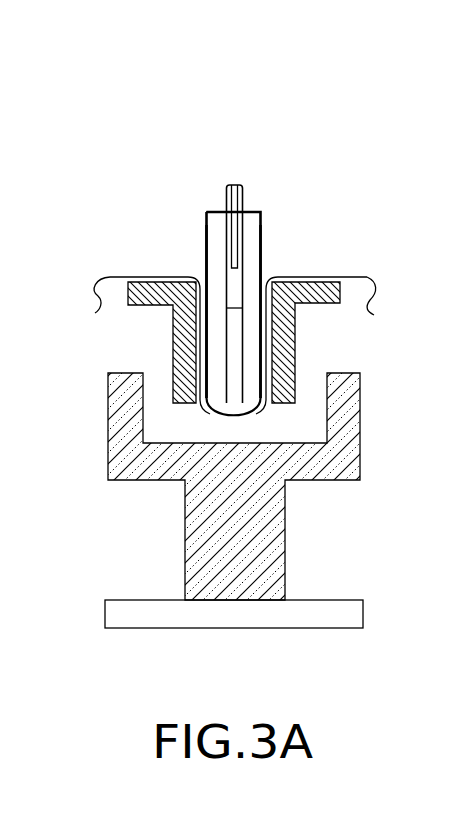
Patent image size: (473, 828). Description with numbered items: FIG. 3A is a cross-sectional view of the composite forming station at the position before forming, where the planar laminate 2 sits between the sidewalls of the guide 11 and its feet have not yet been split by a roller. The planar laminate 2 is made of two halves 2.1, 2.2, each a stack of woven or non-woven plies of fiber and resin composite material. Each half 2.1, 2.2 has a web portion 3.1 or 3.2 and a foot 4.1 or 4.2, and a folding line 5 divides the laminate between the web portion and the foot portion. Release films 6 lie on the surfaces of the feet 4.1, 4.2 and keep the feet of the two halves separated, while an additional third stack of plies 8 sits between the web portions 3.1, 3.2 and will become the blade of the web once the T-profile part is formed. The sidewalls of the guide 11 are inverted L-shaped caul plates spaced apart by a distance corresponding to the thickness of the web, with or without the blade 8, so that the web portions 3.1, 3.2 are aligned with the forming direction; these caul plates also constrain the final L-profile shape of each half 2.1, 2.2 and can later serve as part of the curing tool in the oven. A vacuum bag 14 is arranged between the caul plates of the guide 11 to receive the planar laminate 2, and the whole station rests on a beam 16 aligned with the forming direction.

The planar laminate 2 is at (340, 294).
The first half of the planar laminate 2.1 is at (207, 233).
The second half of the planar laminate 2.2 is at (262, 232).
The web portion of the first half 3.1 is at (89, 415).
The web portion of the second half 3.2 is at (379, 405).
The foot of the first half 4.1 is at (152, 325).
The foot of the second half 4.2 is at (311, 320).
The folding line 5 is at (254, 242).
The release films 6 is at (251, 156).
The additional stack of plies 8 is at (237, 403).
The guide 11 is at (173, 332).
The vacuum bag 14 is at (385, 250).
The beam 16 is at (200, 538).